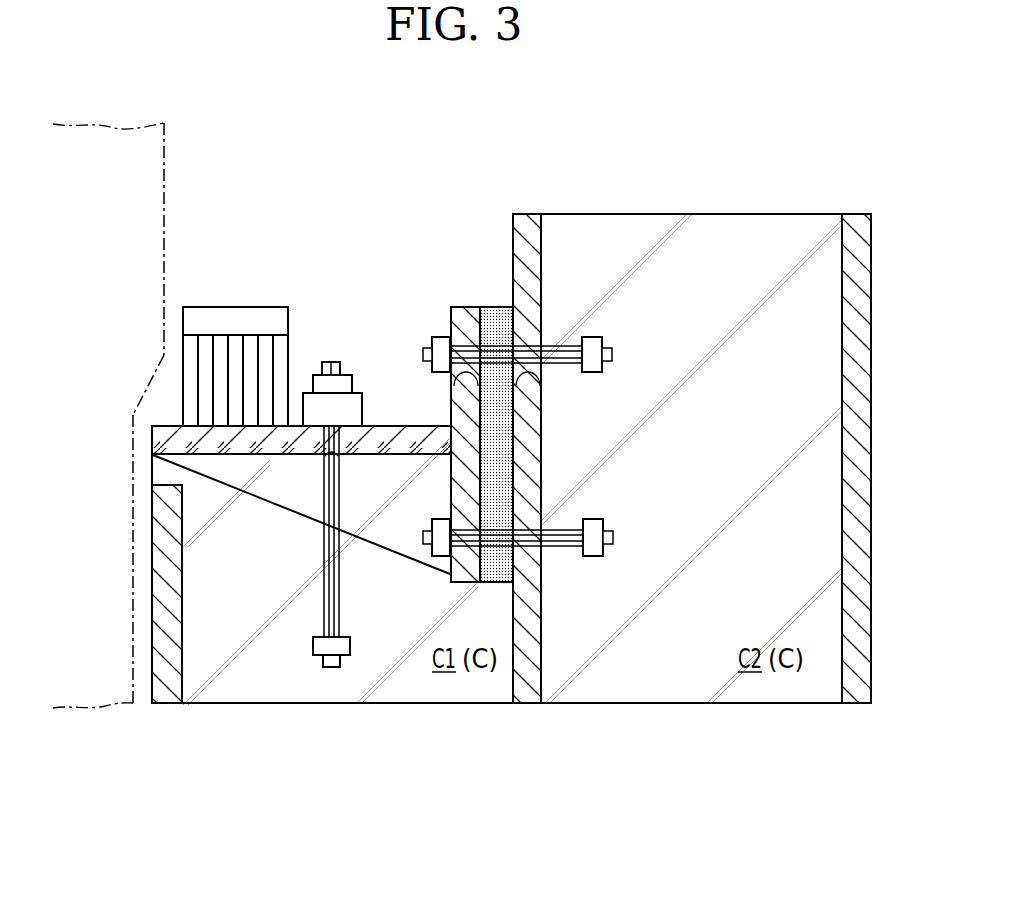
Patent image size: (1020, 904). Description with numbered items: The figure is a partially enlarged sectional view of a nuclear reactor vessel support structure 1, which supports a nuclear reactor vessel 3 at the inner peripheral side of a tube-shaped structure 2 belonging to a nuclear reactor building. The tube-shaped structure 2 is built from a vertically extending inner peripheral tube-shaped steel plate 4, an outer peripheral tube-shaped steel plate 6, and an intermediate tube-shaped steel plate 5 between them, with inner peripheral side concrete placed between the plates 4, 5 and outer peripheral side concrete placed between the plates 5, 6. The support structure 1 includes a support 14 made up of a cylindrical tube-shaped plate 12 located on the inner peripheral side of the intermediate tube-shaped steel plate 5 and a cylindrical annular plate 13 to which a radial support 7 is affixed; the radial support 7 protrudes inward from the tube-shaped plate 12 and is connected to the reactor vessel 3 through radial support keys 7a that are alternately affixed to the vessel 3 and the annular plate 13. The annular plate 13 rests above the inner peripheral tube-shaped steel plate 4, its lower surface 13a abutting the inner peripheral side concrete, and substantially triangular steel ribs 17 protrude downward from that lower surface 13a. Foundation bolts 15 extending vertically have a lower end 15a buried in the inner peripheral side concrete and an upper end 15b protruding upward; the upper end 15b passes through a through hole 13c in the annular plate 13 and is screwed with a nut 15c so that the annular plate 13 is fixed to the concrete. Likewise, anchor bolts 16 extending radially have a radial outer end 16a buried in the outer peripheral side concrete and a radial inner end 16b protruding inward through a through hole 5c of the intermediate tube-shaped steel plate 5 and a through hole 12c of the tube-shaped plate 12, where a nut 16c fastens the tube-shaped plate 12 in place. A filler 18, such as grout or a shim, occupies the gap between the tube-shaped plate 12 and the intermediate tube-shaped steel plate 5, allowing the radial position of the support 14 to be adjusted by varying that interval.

The nuclear reactor vessel support structure 1 is at (645, 142).
The tube-shaped structure 2 is at (823, 213).
The nuclear reactor vessel 3 is at (164, 170).
The inner peripheral tube-shaped steel plate 4 is at (166, 703).
The intermediate tube-shaped steel plate 5 is at (522, 703).
The through hole 5c is at (550, 364).
The outer peripheral tube-shaped steel plate 6 is at (856, 703).
The radial support 7 is at (235, 338).
The radial support key 7a is at (235, 380).
The cylindrical tube-shaped plate 12 is at (436, 411).
The through hole 12c is at (463, 366).
The cylindrical annular plate 13 is at (259, 407).
The lower surface 13a is at (247, 455).
The through hole 13c is at (333, 454).
The support 14 is at (467, 244).
The foundation bolt 15 is at (328, 516).
The lower end 15a is at (325, 667).
The upper end 15b is at (334, 361).
The nut 15c is at (303, 393).
The anchor bolt 16 is at (539, 460).
The radial outer end 16a is at (614, 352).
The radial inner end 16b is at (426, 355).
The nut 16c is at (441, 338).
The rib 17 is at (407, 540).
The filler 18 is at (493, 307).